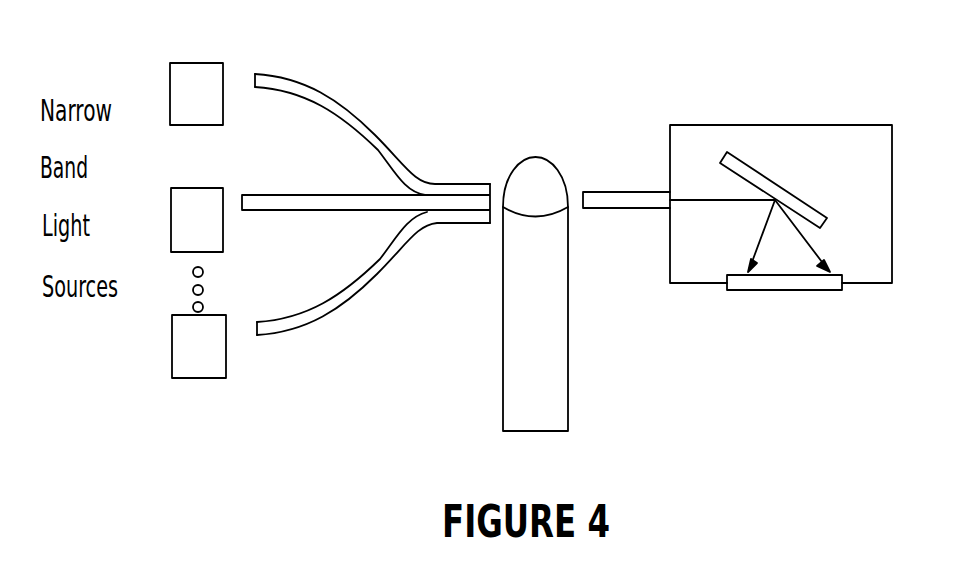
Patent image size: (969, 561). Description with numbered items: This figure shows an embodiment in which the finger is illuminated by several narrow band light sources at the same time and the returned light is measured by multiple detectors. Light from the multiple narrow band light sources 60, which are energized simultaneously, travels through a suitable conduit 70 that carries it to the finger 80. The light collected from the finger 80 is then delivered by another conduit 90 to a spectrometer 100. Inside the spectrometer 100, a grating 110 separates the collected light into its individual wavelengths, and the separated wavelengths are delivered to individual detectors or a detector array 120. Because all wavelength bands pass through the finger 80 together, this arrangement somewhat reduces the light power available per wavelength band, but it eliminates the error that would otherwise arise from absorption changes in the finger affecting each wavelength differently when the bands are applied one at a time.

The narrow band light sources 60 is at (170, 82).
The conduit 70 is at (377, 142).
The finger 80 is at (536, 157).
The conduit 90 is at (636, 192).
The spectrometer 100 is at (720, 125).
The grating 110 is at (786, 190).
The detector array 120 is at (792, 291).